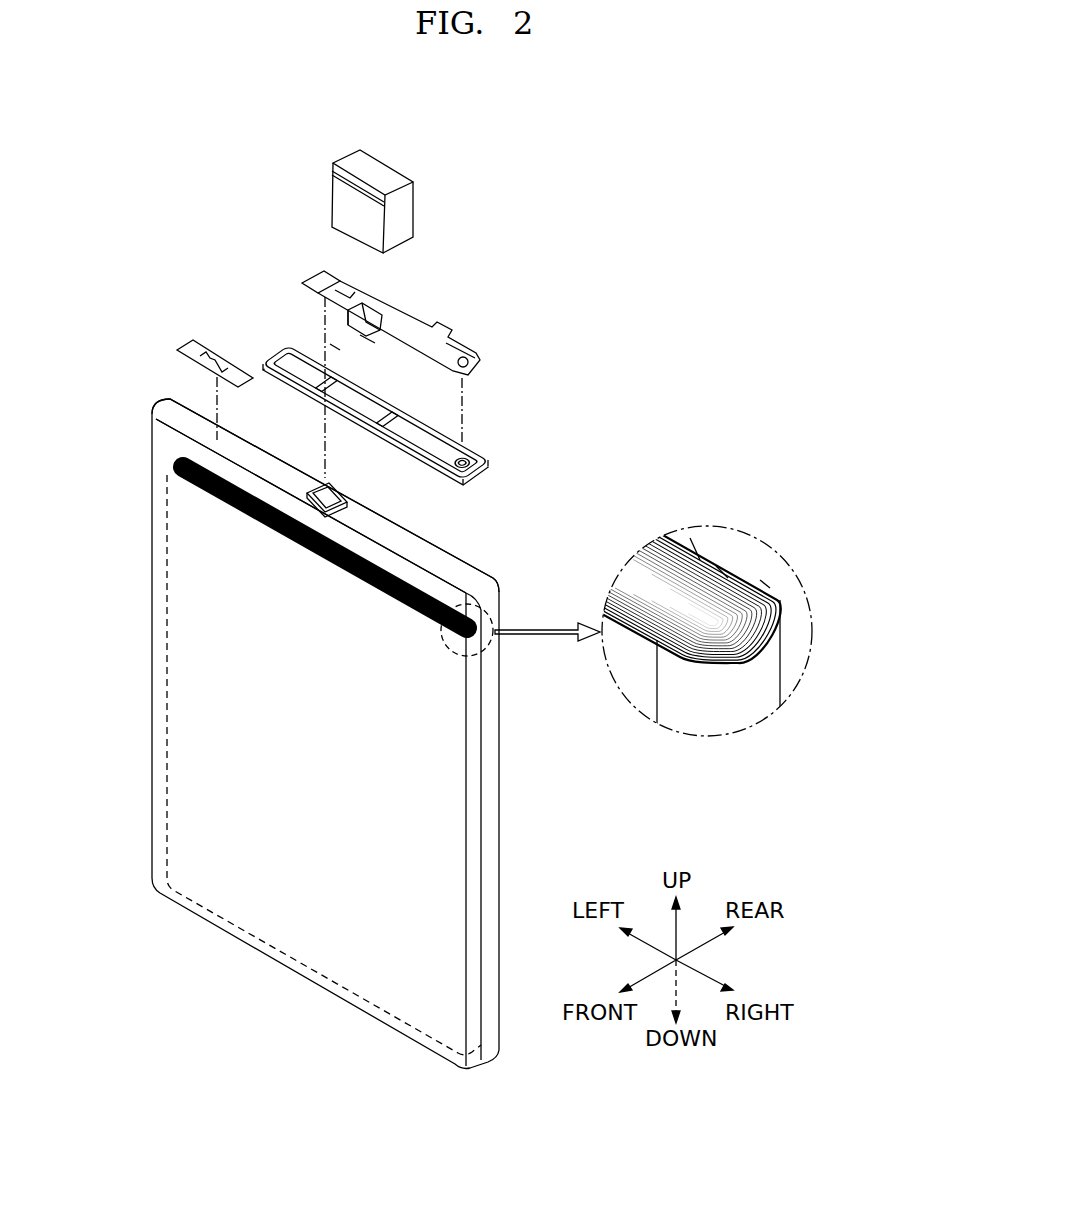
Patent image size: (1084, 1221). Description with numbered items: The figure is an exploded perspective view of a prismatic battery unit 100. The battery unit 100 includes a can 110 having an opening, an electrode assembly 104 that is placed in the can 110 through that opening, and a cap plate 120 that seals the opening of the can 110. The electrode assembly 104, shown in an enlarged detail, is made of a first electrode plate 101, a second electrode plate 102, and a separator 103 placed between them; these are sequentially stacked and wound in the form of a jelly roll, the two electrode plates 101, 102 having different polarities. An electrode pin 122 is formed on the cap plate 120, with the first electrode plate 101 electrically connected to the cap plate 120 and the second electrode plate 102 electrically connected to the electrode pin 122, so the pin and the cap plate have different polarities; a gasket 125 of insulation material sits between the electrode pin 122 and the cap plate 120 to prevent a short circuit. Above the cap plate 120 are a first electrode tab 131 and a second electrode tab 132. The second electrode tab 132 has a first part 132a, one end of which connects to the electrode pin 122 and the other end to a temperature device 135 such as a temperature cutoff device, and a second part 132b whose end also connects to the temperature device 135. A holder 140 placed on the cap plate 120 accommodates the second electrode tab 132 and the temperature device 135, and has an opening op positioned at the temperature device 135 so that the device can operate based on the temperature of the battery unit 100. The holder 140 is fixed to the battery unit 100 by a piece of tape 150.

The battery unit 100 is at (568, 200).
The first electrode plate 101 is at (765, 584).
The second electrode plate 102 is at (698, 570).
The separator 103 is at (723, 578).
The electrode assembly 104 is at (810, 475).
The can 110 is at (500, 777).
The cap plate 120 is at (470, 573).
The electrode pin 122 is at (324, 500).
The gasket 125 is at (300, 492).
The first electrode tab 131 is at (193, 346).
The second electrode tab 132 is at (418, 347).
The first part 132a is at (334, 284).
The second part 132b is at (434, 331).
The temperature device 135 is at (369, 315).
The holder 140 is at (420, 410).
The opening op is at (375, 413).
The tape 150 is at (382, 168).